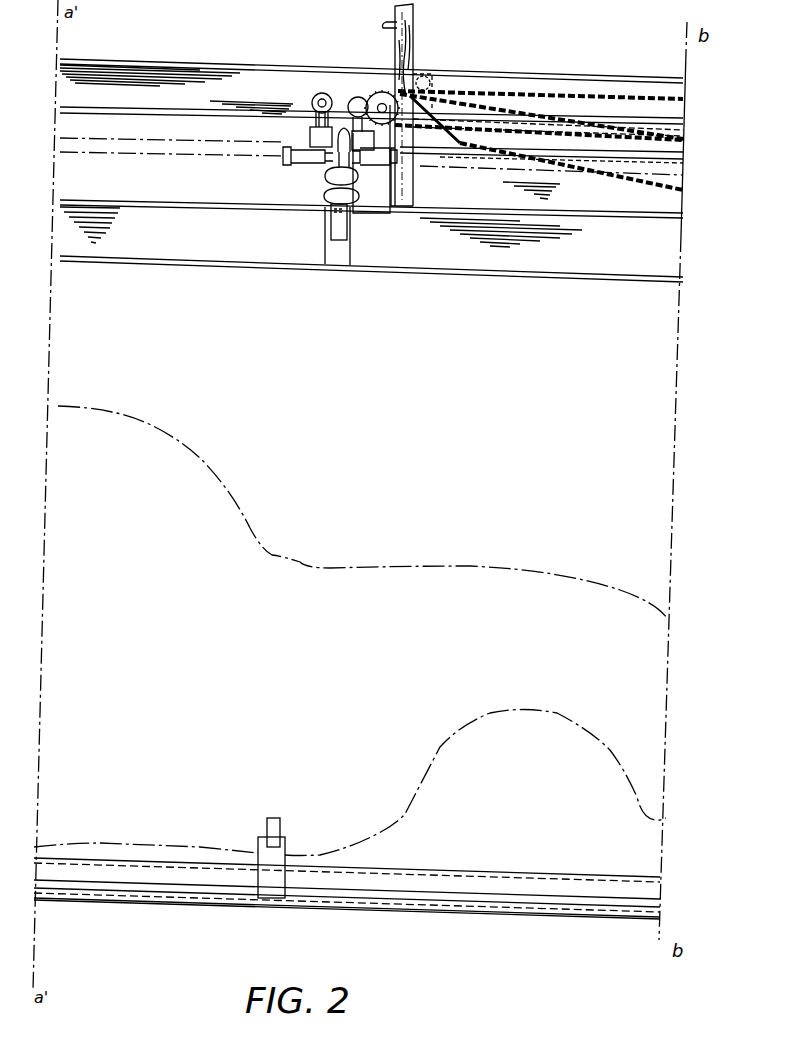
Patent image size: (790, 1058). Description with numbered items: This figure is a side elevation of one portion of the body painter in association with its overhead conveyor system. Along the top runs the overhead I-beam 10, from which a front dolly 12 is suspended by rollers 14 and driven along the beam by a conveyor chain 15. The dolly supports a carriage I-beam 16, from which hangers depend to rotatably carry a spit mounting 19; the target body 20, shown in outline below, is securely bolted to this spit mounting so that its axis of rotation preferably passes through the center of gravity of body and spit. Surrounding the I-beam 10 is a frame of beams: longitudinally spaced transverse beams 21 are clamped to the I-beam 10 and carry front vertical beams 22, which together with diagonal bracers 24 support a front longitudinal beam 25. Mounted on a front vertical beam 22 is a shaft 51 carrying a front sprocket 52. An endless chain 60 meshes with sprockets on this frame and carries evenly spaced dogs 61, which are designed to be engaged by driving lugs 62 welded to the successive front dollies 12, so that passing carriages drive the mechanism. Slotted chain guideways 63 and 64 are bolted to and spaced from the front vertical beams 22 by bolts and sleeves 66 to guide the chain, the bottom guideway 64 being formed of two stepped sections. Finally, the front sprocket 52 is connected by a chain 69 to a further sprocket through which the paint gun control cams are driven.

The overhead I-beam 10 is at (246, 73).
The dolly 12 is at (310, 137).
The rollers 14 is at (351, 99).
The conveyor chain 15 is at (307, 164).
The carriage I-beam 16 is at (209, 211).
The spit mounting 19 is at (493, 932).
The target body 20 is at (228, 497).
The transverse beams 21 is at (391, 29).
The front vertical beams 22 is at (414, 45).
The diagonal bracers 24 is at (410, 194).
The front longitudinal beam 25 is at (684, 214).
The shaft 51 is at (368, 95).
The front sprocket 52 is at (380, 94).
The endless chain 60 is at (572, 137).
The dogs 61 is at (386, 167).
The driving lugs 62 is at (354, 214).
The slotted chain guideway 63 is at (684, 108).
The bottom slotted chain guideway 64 is at (684, 147).
The sleeves 66 is at (428, 78).
The chain 69 is at (641, 145).